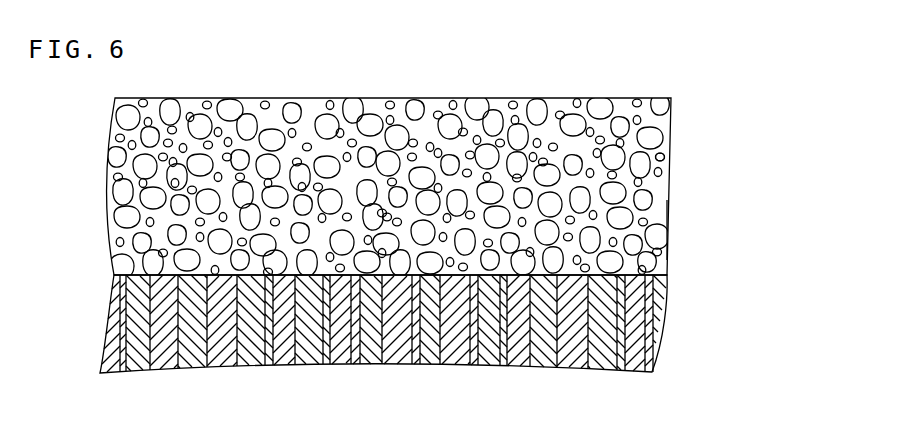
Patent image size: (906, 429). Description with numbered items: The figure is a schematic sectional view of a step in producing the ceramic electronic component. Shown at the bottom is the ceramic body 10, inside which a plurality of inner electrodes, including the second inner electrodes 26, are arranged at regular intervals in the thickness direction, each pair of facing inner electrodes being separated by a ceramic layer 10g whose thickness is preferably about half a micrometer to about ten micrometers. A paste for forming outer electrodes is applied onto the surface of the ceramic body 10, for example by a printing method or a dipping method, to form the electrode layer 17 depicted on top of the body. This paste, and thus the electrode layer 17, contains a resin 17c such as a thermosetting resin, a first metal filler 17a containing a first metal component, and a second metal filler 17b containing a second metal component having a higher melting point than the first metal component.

The electrode layer 17 is at (613, 72).
The first metal filler 17a is at (655, 137).
The second metal filler 17b is at (664, 155).
The resin 17c is at (658, 177).
The ceramic body 10 is at (672, 287).
The second inner electrode 26 is at (655, 325).
The ceramic layer 10g is at (633, 351).